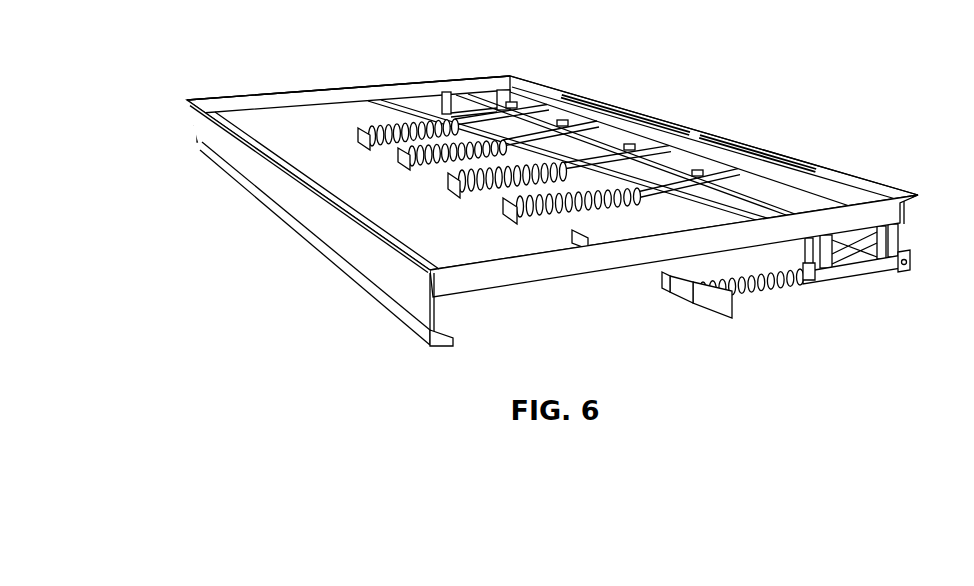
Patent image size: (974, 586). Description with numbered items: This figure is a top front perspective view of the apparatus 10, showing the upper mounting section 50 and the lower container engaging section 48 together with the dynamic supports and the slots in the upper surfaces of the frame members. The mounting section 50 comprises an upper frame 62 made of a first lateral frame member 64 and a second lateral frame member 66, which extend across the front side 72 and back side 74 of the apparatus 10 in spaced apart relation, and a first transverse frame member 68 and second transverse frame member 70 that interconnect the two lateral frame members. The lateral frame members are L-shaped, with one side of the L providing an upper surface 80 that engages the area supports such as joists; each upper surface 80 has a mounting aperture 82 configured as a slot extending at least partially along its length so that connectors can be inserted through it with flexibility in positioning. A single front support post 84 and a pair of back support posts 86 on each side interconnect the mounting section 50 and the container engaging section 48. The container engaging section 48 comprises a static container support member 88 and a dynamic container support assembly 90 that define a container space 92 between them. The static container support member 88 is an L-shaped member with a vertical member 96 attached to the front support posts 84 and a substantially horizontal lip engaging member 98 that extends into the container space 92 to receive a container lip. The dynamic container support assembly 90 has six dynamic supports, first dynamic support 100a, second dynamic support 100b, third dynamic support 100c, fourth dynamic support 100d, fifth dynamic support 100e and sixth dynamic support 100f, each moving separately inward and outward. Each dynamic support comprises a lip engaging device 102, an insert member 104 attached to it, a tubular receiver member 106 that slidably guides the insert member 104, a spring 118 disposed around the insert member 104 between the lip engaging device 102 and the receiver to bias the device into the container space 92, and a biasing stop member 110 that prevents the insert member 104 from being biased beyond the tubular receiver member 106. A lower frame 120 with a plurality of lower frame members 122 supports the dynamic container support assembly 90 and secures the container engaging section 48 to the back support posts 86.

The apparatus 10 is at (882, 112).
The container engaging section 48 is at (852, 325).
The mounting section 50 is at (175, 94).
The upper frame 62 is at (545, 76).
The first lateral frame member 64 is at (400, 264).
The second lateral frame member 66 is at (677, 127).
The first transverse frame member 68 is at (345, 100).
The second transverse frame member 70 is at (540, 272).
The front side 72 is at (243, 234).
The back side 74 is at (742, 80).
The upper surface 80 is at (883, 186).
The mounting apertures 82 is at (590, 100).
The front support posts 84 is at (436, 310).
The back support posts 86 is at (452, 98).
The static container support member 88 is at (406, 344).
The dynamic container support assembly 90 is at (395, 116).
The container space 92 is at (300, 128).
The vertical member 96 is at (392, 303).
The lip engaging member 98 is at (445, 342).
The first dynamic support 100a is at (360, 141).
The second dynamic support 100b is at (400, 160).
The third dynamic support 100c is at (450, 182).
The fourth dynamic support 100d is at (505, 204).
The fifth dynamic support 100e is at (613, 274).
The sixth dynamic support 100f is at (680, 305).
The lip engaging device 102 is at (721, 310).
The insert member 104 is at (808, 283).
The tubular receiver member 106 is at (858, 274).
The biasing stop member 110 is at (906, 264).
The spring 118 is at (769, 295).
The lower frame 120 is at (675, 171).
The lower frame members 122 is at (594, 140).